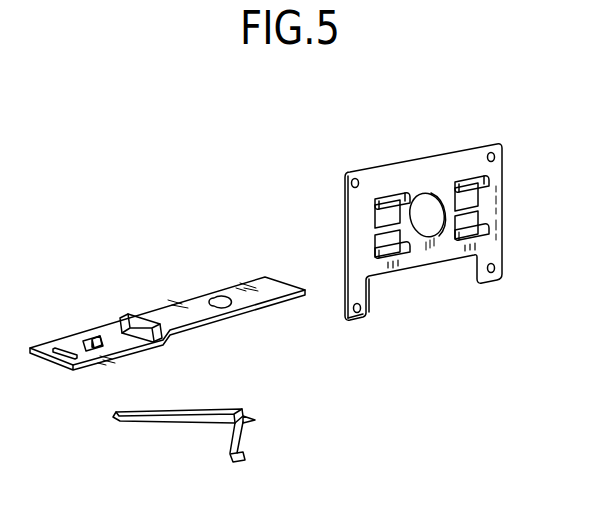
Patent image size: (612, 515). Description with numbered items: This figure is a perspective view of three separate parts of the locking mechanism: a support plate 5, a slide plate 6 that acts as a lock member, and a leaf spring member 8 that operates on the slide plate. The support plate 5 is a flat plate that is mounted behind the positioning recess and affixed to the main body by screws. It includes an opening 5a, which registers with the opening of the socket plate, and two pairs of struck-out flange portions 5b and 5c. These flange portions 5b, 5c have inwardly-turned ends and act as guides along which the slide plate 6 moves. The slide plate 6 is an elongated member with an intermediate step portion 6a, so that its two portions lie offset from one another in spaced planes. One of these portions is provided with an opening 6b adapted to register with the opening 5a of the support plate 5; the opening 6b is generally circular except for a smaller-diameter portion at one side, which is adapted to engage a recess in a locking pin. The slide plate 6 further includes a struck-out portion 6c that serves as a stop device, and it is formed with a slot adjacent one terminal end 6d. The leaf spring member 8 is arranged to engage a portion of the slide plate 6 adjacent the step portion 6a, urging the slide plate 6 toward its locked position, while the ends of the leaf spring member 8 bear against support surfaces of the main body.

The support plate 5 is at (418, 158).
The opening 5a is at (433, 240).
The struck-out flange portions 5b is at (480, 175).
The struck-out flange portions 5c is at (377, 210).
The slide plate 6 is at (175, 312).
The intermediate step portion 6a is at (167, 338).
The opening 6b is at (207, 297).
The struck-out portion 6c is at (92, 340).
The terminal end 6d is at (36, 347).
The leaf spring member 8 is at (155, 418).